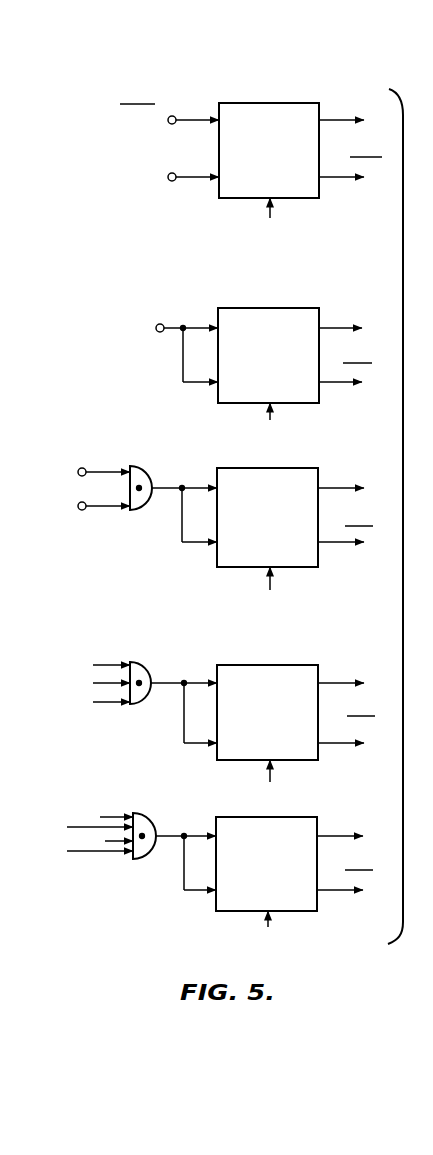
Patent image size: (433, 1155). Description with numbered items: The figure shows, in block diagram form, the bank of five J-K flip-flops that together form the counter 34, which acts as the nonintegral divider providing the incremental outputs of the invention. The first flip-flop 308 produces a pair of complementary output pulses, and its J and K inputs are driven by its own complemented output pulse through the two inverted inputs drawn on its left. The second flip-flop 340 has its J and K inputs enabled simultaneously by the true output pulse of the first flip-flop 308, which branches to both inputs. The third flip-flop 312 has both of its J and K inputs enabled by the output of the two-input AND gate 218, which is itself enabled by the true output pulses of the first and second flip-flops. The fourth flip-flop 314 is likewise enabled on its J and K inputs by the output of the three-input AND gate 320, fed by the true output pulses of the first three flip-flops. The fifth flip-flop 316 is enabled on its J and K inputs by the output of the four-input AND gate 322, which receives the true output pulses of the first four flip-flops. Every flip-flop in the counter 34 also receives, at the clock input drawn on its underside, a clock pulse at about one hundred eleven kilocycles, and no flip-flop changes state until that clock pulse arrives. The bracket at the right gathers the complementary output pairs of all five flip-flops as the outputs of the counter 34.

The counter 34 is at (339, 51).
The flip-flop 308 is at (285, 110).
The flip flop F151 340 is at (280, 314).
The AND gate 218 is at (153, 467).
The flip-flop 312 is at (293, 474).
The AND gate 320 is at (153, 665).
The flip-flop 314 is at (293, 673).
The AND gate 322 is at (151, 818).
The flip-flop 316 is at (293, 824).